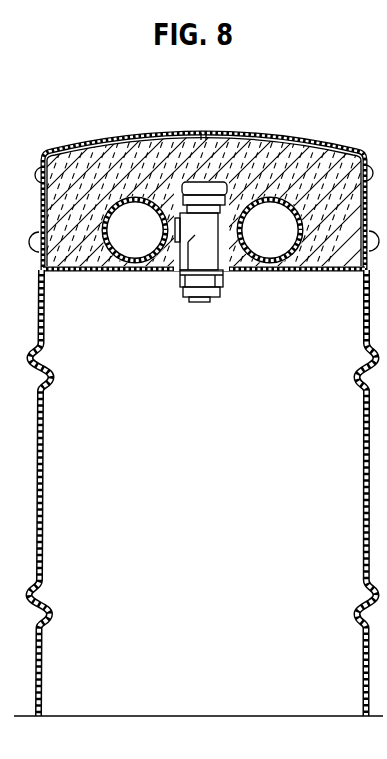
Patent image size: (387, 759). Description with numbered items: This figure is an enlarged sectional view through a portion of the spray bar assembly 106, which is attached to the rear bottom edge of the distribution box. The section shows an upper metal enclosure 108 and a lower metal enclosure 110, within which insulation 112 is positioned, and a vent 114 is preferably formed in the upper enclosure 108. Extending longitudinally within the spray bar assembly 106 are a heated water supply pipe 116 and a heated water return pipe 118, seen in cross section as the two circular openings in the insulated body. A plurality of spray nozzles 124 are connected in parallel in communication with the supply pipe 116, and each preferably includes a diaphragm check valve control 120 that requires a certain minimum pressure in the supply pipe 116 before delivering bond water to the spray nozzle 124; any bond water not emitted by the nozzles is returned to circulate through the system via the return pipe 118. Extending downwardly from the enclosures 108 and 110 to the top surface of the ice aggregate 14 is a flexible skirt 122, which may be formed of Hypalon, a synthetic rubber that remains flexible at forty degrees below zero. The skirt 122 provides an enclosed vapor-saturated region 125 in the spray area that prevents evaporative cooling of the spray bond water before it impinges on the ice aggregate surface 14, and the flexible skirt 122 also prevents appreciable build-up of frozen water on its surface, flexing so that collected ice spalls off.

The ice aggregate 14 is at (137, 715).
The spray bar assembly 106 is at (148, 108).
The upper metal enclosure 108 is at (290, 138).
The lower metal enclosure 110 is at (278, 277).
The insulation 112 is at (88, 145).
The vent 114 is at (203, 133).
The heated water supply pipe 116 is at (136, 198).
The heated water return pipe 118 is at (267, 198).
The diaphragm check valve control 120 is at (237, 148).
The flexible skirt 122 is at (45, 507).
The spray nozzle 124 is at (210, 300).
The vapor-saturated region 125 is at (203, 425).